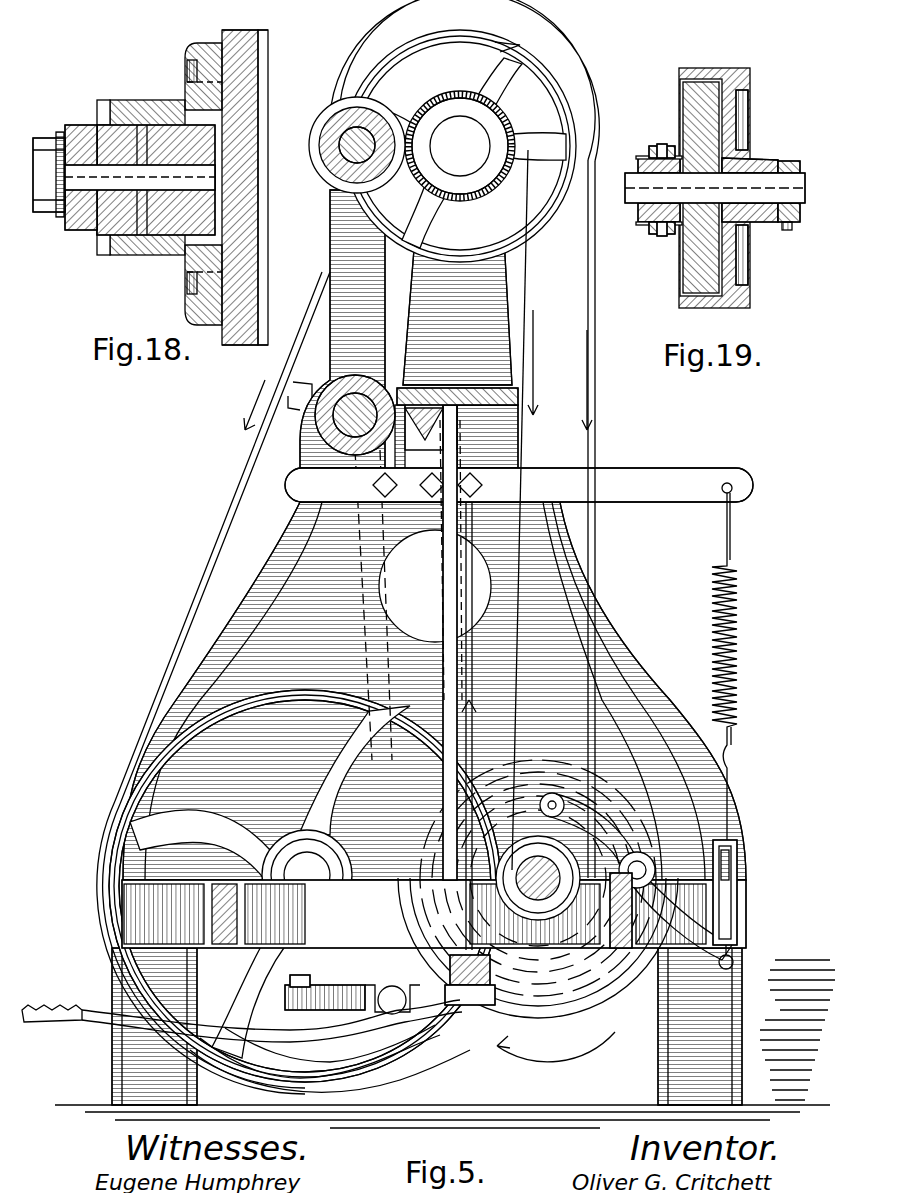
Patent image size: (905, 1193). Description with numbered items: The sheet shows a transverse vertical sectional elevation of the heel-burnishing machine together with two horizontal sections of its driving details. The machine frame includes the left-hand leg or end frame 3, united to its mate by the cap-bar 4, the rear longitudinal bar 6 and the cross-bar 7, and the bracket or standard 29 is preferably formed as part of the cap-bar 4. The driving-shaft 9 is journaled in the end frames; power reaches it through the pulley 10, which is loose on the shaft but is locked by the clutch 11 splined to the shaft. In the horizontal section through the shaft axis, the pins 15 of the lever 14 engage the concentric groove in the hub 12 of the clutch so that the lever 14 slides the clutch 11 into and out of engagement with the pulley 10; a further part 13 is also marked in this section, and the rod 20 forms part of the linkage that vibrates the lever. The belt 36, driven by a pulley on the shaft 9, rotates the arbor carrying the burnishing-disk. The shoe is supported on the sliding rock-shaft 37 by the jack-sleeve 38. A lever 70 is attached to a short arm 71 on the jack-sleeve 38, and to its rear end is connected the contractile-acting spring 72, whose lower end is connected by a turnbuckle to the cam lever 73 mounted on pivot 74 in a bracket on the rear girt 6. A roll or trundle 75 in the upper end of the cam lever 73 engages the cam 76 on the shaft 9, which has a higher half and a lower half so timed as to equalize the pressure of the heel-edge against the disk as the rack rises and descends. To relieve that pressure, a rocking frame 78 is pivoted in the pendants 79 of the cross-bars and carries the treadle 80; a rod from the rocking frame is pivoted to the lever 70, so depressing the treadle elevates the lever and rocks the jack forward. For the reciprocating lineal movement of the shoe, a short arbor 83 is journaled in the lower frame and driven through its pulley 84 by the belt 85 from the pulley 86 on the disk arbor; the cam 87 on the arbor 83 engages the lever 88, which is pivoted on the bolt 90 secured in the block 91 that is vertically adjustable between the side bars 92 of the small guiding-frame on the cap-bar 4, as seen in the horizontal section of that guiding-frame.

In FIG. 5, the left-hand leg or end frame 3 is at (442, 659).
In FIG. 18, the cap-bar 4 is at (268, 145).
In FIG. 5, the cap-bar 4 is at (445, 642).
In FIG. 5, the rear longitudinal bar 6 is at (610, 930).
In FIG. 5, the cross-bar 7 is at (434, 924).
In FIG. 19, the driving-shaft 9 is at (715, 188).
In FIG. 5, the driving-shaft 9 is at (538, 878).
In FIG. 19, the pulley 10 is at (714, 180).
In FIG. 5, the pulley 10 is at (538, 970).
In FIG. 19, the clutch 11 is at (690, 283).
In FIG. 5, the clutch 11 is at (538, 883).
In FIG. 19, the hub 12 is at (638, 208).
In FIG. 19, the hub flange 13 is at (637, 160).
In FIG. 19, the lever 14 is at (650, 147).
In FIG. 19, the pins 15 is at (662, 144).
In FIG. 19, the rod 20 is at (748, 262).
In FIG. 5, the bracket or standard 29 is at (457, 325).
In FIG. 5, the belt 36 is at (596, 445).
In FIG. 5, the sliding rock-shaft 37 is at (357, 276).
In FIG. 5, the jack-sleeve 38 is at (320, 392).
In FIG. 5, the lever 70 is at (519, 485).
In FIG. 5, the short arm 71 is at (316, 485).
In FIG. 5, the contractile-acting spring 72 is at (734, 731).
In FIG. 5, the cam lever 73 is at (640, 877).
In FIG. 5, the pivot 74 is at (637, 870).
In FIG. 5, the roll or trundle 75 is at (552, 797).
In FIG. 5, the cam 76 is at (540, 832).
In FIG. 5, the rocking frame 78 is at (390, 982).
In FIG. 5, the pendants 79 is at (392, 986).
In FIG. 5, the treadle 80 is at (246, 1046).
In FIG. 5, the short arbor 83 is at (307, 875).
In FIG. 5, the pulley 84 is at (305, 886).
In FIG. 5, the belt 85 is at (517, 712).
In FIG. 5, the pulley 86 is at (514, 118).
In FIG. 5, the cam 87 is at (473, 720).
In FIG. 18, the lever 88 is at (65, 188).
In FIG. 5, the lever 88 is at (373, 615).
In FIG. 18, the bolt 90 is at (140, 177).
In FIG. 18, the block 91 is at (156, 177).
In FIG. 18, the side bars 92 is at (147, 179).